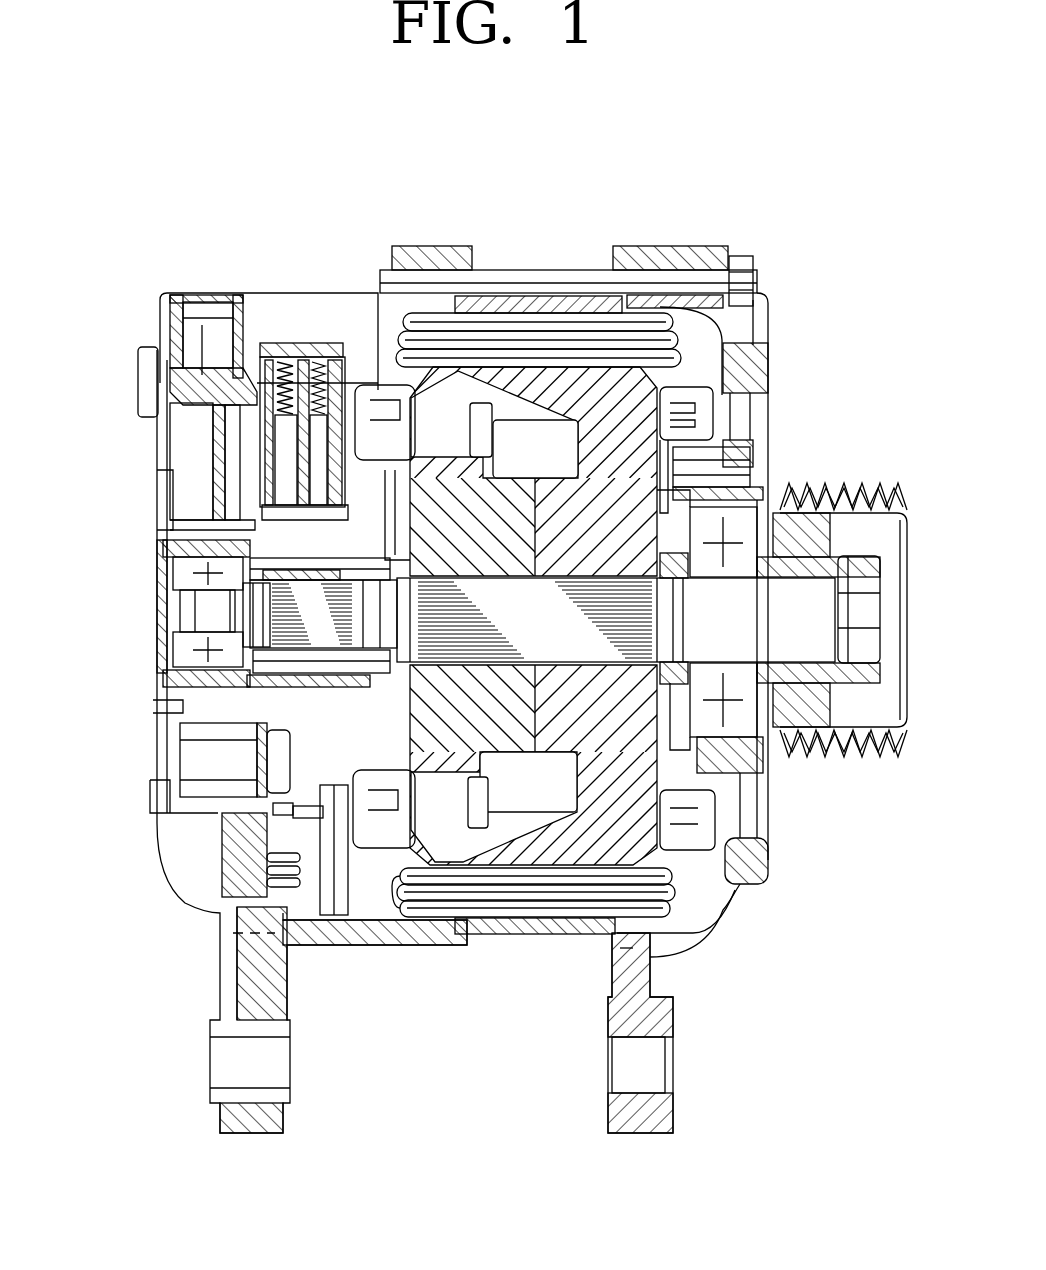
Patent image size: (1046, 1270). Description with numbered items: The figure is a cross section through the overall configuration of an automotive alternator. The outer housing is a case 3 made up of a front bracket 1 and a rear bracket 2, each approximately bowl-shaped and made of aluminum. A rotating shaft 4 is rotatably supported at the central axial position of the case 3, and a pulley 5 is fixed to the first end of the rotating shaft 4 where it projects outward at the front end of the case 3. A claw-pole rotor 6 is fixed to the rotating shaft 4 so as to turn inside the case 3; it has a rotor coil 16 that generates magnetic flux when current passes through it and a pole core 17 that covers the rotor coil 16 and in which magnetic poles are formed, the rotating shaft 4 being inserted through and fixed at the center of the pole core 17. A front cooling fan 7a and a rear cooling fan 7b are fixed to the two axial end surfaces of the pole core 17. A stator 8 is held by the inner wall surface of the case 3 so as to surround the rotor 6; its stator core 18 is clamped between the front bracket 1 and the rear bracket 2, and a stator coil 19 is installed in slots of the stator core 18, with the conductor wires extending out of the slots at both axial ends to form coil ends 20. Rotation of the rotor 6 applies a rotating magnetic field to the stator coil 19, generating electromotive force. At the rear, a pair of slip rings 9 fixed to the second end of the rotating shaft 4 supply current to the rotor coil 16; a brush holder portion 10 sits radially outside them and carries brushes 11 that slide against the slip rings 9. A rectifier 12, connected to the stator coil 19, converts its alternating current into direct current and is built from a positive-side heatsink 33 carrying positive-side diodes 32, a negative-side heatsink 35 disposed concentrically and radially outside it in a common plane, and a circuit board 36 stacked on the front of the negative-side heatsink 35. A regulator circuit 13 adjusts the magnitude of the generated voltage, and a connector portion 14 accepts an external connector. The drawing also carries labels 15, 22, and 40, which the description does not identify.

The front bracket 1 is at (752, 864).
The rear bracket 2 is at (225, 1003).
The case 3 is at (750, 897).
The rotating shaft 4 is at (808, 612).
The pulley 5 is at (855, 482).
The claw-pole rotor 6 is at (600, 184).
The front cooling fan 7a is at (698, 408).
The rear cooling fan 7b is at (383, 395).
The stator 8 is at (578, 1016).
The slip rings 9 is at (290, 583).
The brush holder portion 10 is at (376, 388).
The brushes 11 is at (328, 508).
The rectifier 12 is at (252, 806).
The regulator circuit 13 is at (215, 462).
The connector portion 14 is at (180, 322).
The heat sink 15 is at (272, 510).
The rotor coil 16 is at (521, 430).
The pole core 17 is at (577, 398).
The stator core 18 is at (567, 918).
The stator coil 19 is at (512, 898).
The coil ends 20 is at (425, 908).
The regulator case 22 is at (190, 432).
The positive-side diodes 32 is at (162, 708).
The positive-side heatsink 33 is at (272, 750).
The negative-side heatsink 35 is at (250, 855).
The circuit board 36 is at (343, 915).
The rear cover 40 is at (253, 330).